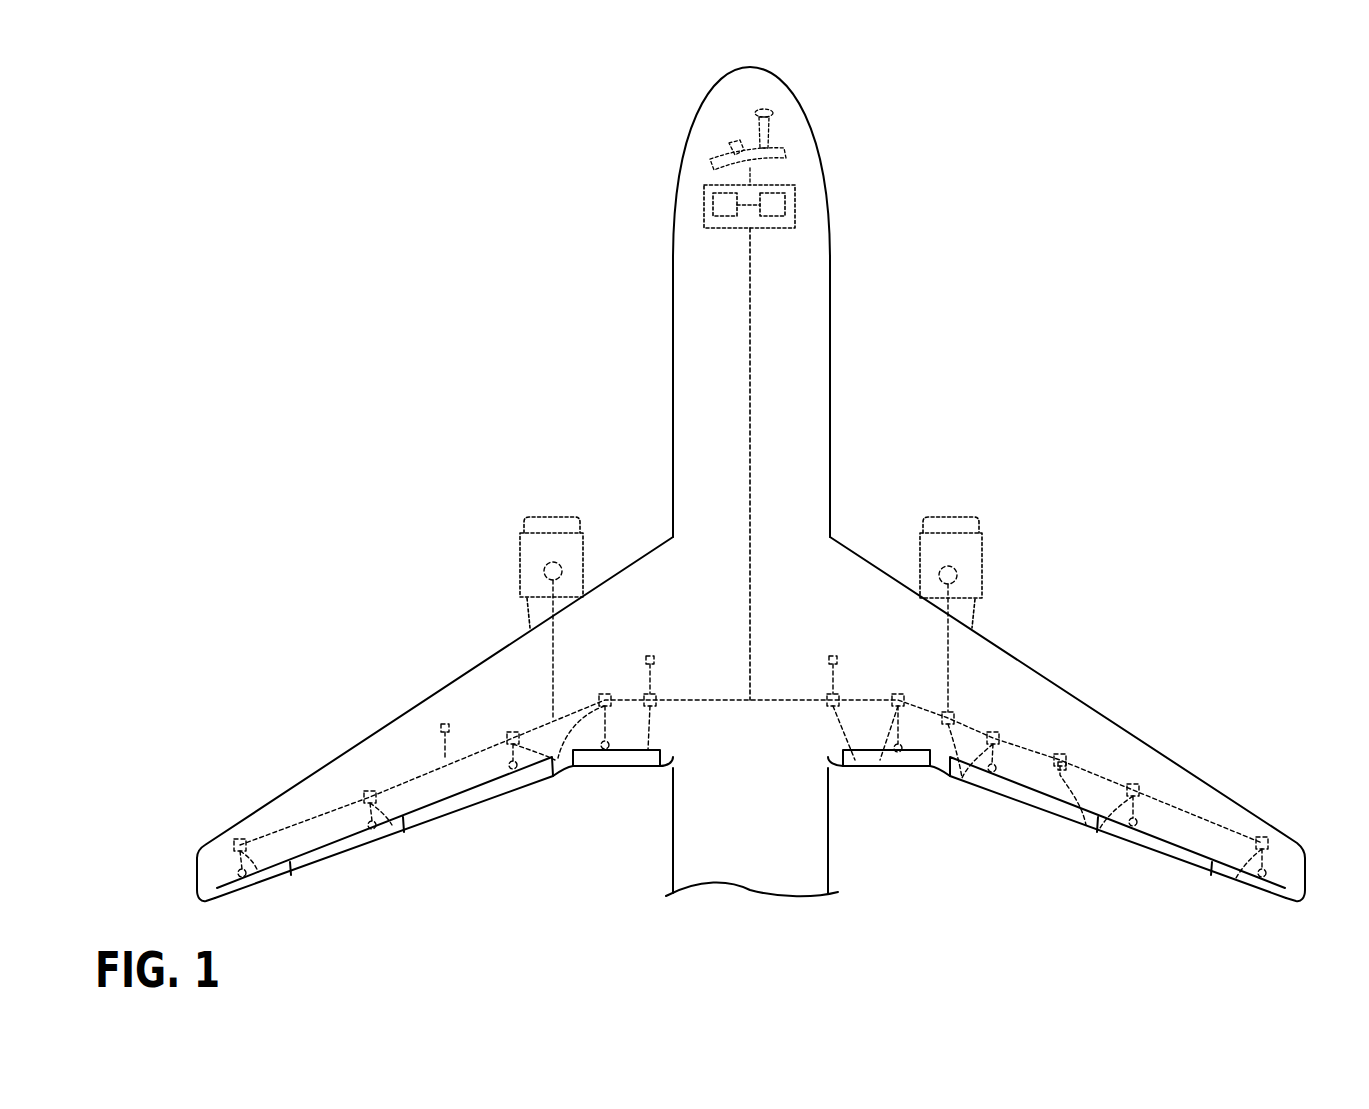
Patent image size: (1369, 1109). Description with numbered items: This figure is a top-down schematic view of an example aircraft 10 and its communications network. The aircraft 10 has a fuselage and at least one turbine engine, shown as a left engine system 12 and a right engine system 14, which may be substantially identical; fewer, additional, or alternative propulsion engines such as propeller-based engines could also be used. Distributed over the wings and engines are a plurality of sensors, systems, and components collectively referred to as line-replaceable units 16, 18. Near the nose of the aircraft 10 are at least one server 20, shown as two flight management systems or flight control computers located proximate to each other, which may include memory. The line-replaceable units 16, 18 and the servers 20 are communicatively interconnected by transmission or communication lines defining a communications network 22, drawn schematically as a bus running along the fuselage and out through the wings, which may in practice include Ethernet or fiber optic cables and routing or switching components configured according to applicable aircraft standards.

The aircraft 10 is at (567, 98).
The left engine system 12 is at (552, 525).
The right engine system 14 is at (962, 527).
The line-replaceable unit 16 is at (252, 890).
The line-replaceable unit 18 is at (563, 571).
The server 20 is at (704, 222).
The communications network 22 is at (750, 405).